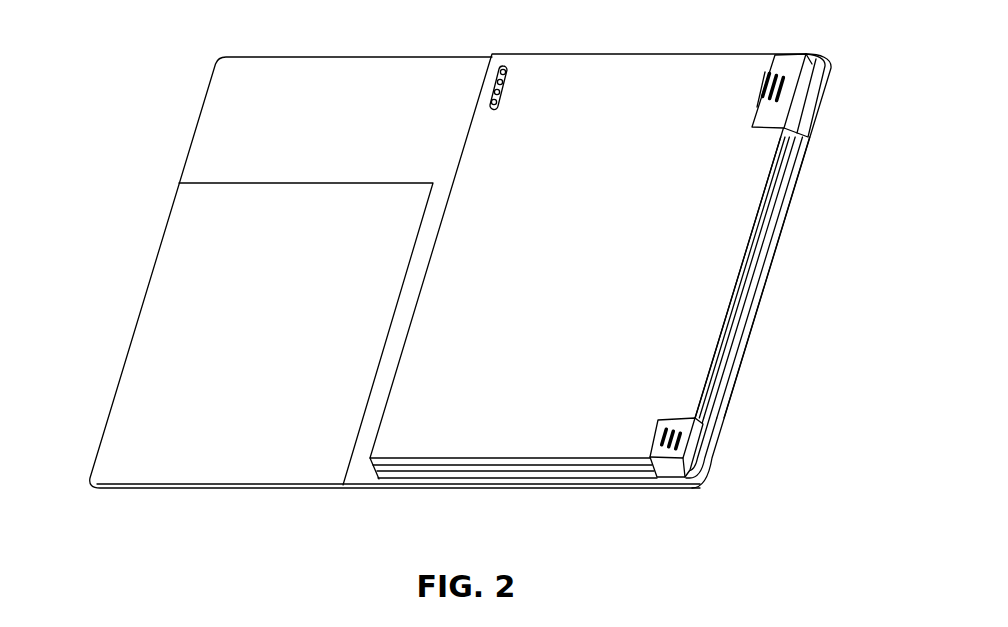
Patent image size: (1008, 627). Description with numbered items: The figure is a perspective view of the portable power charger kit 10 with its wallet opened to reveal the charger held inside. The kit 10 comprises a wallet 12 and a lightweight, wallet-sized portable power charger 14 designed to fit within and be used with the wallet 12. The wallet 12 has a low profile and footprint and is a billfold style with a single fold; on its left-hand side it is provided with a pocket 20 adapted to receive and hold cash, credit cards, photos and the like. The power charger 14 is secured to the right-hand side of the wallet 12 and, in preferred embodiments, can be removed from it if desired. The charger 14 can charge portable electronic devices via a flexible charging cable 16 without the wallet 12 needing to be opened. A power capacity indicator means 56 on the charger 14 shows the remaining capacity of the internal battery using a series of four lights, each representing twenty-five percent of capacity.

The portable power charger kit 10 is at (471, 249).
The wallet 12 is at (393, 249).
The portable power charger 14 is at (627, 255).
The flexible charging cable 16 is at (821, 52).
The pocket 20 is at (166, 320).
The power capacity indicator means 56 is at (538, 47).